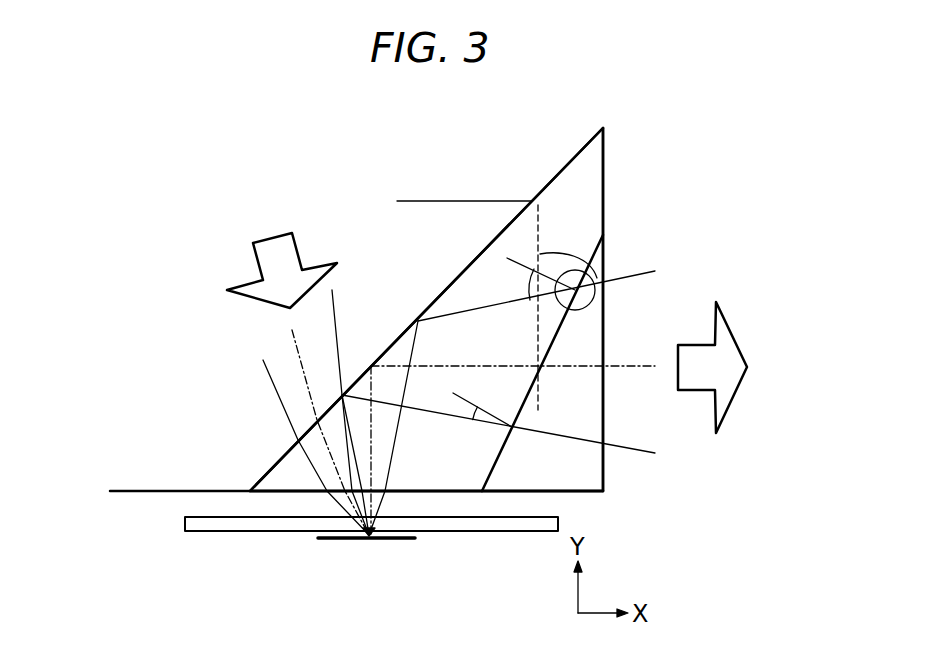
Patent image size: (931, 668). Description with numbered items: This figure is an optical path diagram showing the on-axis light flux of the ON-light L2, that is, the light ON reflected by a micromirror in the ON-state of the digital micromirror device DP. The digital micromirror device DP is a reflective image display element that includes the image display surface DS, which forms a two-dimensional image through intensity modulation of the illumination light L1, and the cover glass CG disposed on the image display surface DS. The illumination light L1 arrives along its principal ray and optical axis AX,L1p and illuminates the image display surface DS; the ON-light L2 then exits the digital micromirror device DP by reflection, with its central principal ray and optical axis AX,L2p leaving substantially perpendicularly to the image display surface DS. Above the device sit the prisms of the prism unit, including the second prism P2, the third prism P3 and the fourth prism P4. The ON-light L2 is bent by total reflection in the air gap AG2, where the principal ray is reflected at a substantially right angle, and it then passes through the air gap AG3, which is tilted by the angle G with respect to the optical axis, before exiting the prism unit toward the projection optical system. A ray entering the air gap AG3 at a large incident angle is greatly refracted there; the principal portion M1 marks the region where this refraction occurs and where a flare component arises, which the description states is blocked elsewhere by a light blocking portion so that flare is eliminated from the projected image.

The ON-light ON is at (171, 115).
The second prism P2 is at (229, 475).
The third prism P3 is at (463, 477).
The fourth prism P4 is at (594, 477).
The principal portion M1 is at (604, 278).
The air gap AG3 is at (597, 247).
The air gap AG2 is at (457, 275).
The angle G is at (536, 274).
The illumination light L1 is at (257, 262).
The optical axis and principal ray of illumination light AX,L1p is at (305, 379).
The optical axis and principal ray of ON-light AX,L2p is at (632, 370).
The ON-light L2 is at (697, 345).
The cover glass CG is at (185, 525).
The image display surface DS is at (410, 538).
The digital micromirror device DP is at (389, 573).